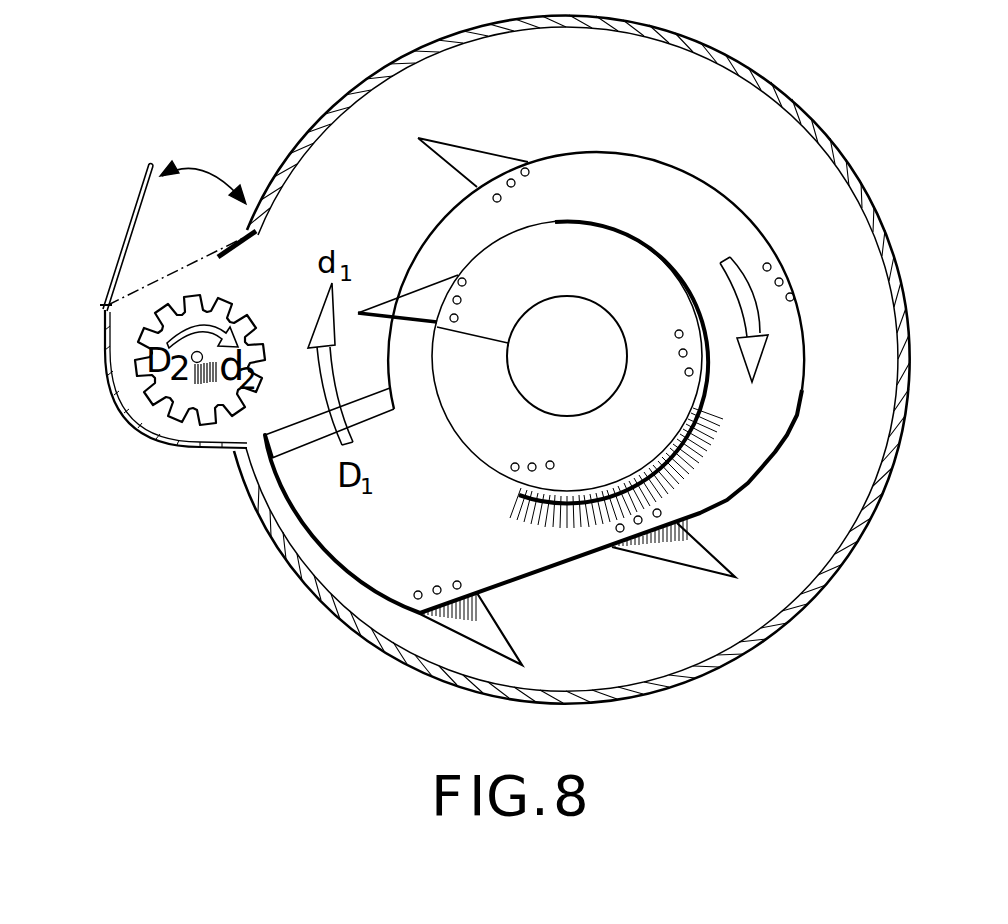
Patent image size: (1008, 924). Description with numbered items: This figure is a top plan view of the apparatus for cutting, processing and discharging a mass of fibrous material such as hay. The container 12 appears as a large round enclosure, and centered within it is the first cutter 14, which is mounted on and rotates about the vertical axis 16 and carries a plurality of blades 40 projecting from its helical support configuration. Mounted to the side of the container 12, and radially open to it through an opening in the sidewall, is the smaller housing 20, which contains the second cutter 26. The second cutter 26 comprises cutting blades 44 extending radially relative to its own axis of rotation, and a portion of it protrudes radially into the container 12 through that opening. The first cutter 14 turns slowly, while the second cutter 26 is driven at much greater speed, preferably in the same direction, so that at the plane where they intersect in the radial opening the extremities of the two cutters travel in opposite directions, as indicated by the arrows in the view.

The container 12 is at (803, 110).
The first cutter 14 is at (579, 177).
The vertical axis 16 is at (592, 367).
The housing 20 is at (128, 413).
The second cutter 26 is at (192, 390).
The blades 40 is at (470, 157).
The cutting blades 44 is at (130, 343).